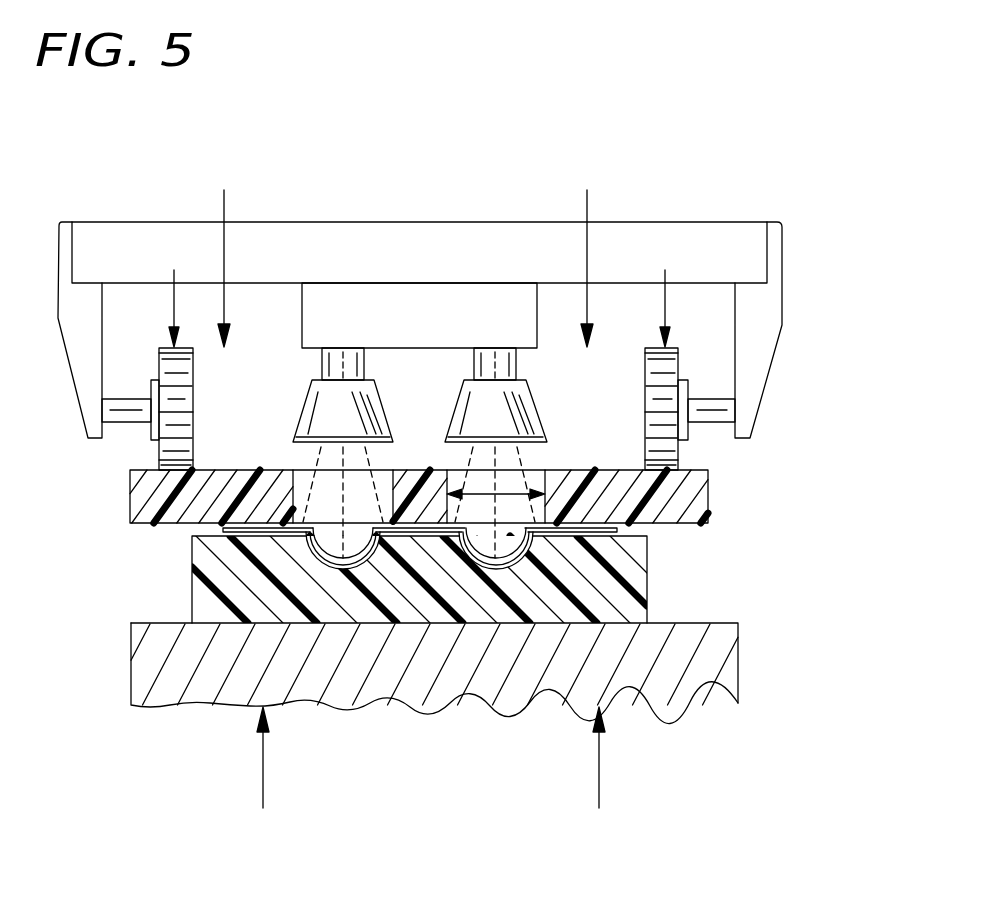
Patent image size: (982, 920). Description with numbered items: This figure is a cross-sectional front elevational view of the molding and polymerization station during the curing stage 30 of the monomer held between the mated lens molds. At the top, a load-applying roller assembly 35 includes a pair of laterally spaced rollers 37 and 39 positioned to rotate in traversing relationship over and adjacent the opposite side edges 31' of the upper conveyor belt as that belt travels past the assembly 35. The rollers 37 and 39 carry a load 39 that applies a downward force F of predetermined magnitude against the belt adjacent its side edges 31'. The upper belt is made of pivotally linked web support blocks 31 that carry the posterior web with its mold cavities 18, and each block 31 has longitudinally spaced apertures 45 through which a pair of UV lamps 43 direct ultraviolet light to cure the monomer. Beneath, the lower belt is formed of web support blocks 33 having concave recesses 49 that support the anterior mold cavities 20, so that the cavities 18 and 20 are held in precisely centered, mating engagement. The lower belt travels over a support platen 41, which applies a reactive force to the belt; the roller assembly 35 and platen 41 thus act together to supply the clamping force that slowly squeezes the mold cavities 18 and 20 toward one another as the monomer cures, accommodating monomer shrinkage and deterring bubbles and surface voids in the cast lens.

The curing stage 30 is at (519, 126).
The load-applying roller assembly 35 is at (769, 267).
The roller 39 is at (652, 404).
The roller 37 is at (181, 404).
The UV lamp 43 is at (457, 403).
The aperture 45 is at (305, 467).
The web support block 31 is at (411, 514).
The side edge 31' is at (411, 493).
The concave recess 49 is at (320, 554).
The mold cavity 18 is at (336, 550).
The mold cavity 20 is at (383, 548).
The web support block 33 is at (192, 594).
The support platen 41 is at (140, 680).